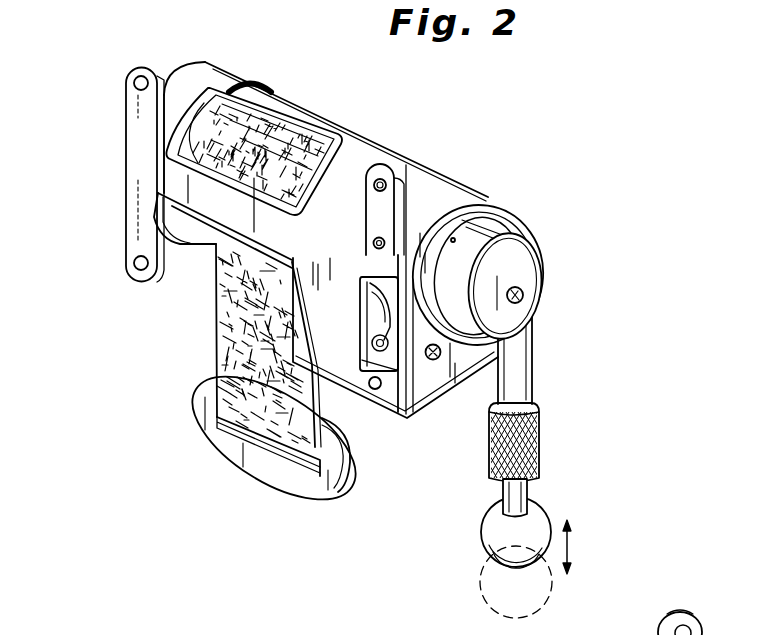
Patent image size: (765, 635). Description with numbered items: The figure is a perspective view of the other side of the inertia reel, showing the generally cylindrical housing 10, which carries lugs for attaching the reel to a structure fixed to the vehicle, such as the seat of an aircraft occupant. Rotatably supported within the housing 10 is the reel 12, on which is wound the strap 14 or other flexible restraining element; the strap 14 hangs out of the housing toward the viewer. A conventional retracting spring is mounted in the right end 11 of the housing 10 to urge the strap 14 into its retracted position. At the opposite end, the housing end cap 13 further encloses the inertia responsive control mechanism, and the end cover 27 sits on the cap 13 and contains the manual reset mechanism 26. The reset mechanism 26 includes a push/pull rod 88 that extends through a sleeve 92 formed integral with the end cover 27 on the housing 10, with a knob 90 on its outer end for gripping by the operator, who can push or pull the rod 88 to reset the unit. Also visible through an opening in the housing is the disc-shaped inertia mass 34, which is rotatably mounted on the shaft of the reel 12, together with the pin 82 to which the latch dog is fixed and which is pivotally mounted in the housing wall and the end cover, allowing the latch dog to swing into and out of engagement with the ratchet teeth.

The housing 10 is at (380, 149).
The right end of the housing 11 is at (205, 62).
The reel 12 is at (196, 138).
The housing end cap 13 is at (495, 206).
The strap 14 is at (227, 338).
The manual reset mechanism 26 is at (552, 424).
The end cover 27 is at (524, 266).
The inertia mass 34 is at (377, 303).
The pin 82 is at (378, 353).
The push/pull rod 88 is at (530, 491).
The knob 90 is at (500, 538).
The sleeve 92 is at (526, 379).